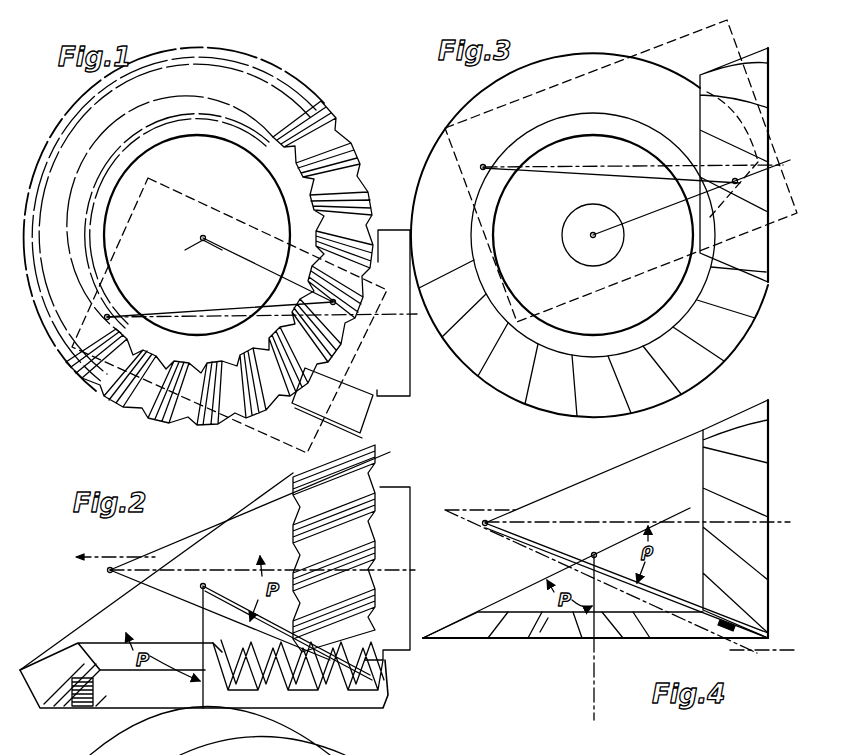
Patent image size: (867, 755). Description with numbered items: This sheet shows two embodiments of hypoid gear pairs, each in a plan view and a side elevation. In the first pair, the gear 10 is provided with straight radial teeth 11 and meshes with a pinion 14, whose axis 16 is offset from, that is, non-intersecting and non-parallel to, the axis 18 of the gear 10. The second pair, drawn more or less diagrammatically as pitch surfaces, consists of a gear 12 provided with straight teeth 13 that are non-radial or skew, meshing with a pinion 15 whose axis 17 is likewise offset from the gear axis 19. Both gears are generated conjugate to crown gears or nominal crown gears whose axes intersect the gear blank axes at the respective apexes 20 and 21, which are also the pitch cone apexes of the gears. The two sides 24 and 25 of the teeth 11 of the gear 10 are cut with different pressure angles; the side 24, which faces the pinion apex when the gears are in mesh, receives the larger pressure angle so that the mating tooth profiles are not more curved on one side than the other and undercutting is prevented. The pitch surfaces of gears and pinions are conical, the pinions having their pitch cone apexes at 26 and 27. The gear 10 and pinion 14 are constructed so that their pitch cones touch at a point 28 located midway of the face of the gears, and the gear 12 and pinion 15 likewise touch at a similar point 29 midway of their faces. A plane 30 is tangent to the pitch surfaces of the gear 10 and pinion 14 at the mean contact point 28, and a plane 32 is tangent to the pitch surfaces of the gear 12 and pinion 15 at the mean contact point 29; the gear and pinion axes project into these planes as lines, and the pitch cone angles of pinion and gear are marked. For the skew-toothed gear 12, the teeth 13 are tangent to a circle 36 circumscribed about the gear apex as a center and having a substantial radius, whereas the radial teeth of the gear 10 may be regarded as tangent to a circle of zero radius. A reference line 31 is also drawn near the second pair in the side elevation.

In FIG. 1, the gear 10 is at (85, 362).
In FIG. 2, the gear 10 is at (357, 700).
In FIG. 1, the straight radial teeth 11 is at (164, 410).
In FIG. 2, the straight radial teeth 11 is at (297, 692).
In FIG. 3, the gear 12 is at (735, 332).
In FIG. 4, the gear 12 is at (512, 634).
In FIG. 3, the straight skew teeth 13 is at (713, 365).
In FIG. 4, the straight skew teeth 13 is at (542, 632).
In FIG. 1, the pinion 14 is at (394, 394).
In FIG. 2, the pinion 14 is at (383, 492).
In FIG. 3, the pinion 15 is at (760, 248).
In FIG. 4, the pinion 15 is at (762, 598).
In FIG. 1, the pinion axis 16 is at (230, 311).
In FIG. 2, the pinion axis 16 is at (411, 566).
In FIG. 3, the pinion axis 17 is at (770, 165).
In FIG. 4, the pinion axis 17 is at (772, 522).
In FIG. 1, the gear axis 18 is at (254, 270).
In FIG. 2, the gear axis 18 is at (202, 633).
In FIG. 3, the gear axis 19 is at (602, 246).
In FIG. 4, the gear axis 19 is at (600, 662).
In FIG. 1, the apex 20 is at (222, 256).
In FIG. 2, the apex 20 is at (207, 586).
In FIG. 3, the apex 21 is at (622, 246).
In FIG. 4, the apex 21 is at (597, 553).
In FIG. 1, the tooth side 24 is at (147, 398).
In FIG. 2, the tooth side 24 is at (258, 682).
In FIG. 1, the tooth side 25 is at (170, 418).
In FIG. 1, the pitch cone apex 26 is at (209, 324).
In FIG. 2, the pitch cone apex 26 is at (237, 556).
In FIG. 3, the pitch cone apex 27 is at (483, 165).
In FIG. 4, the pitch cone apex 27 is at (484, 526).
In FIG. 1, the mean contact point 28 is at (372, 268).
In FIG. 2, the mean contact point 28 is at (333, 665).
In FIG. 3, the mean contact point 29 is at (737, 184).
In FIG. 4, the mean contact point 29 is at (730, 629).
In FIG. 1, the tangent plane 30 is at (276, 434).
In FIG. 2, the tangent plane 30 is at (90, 560).
In FIG. 4, the reference line 31 is at (778, 655).
In FIG. 3, the tangent plane 32 is at (662, 44).
In FIG. 3, the circle 36 is at (563, 246).